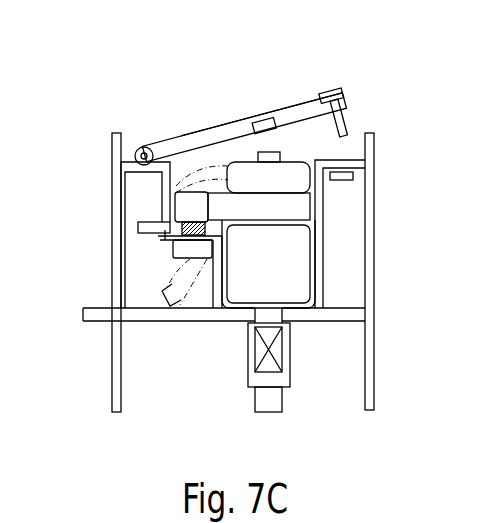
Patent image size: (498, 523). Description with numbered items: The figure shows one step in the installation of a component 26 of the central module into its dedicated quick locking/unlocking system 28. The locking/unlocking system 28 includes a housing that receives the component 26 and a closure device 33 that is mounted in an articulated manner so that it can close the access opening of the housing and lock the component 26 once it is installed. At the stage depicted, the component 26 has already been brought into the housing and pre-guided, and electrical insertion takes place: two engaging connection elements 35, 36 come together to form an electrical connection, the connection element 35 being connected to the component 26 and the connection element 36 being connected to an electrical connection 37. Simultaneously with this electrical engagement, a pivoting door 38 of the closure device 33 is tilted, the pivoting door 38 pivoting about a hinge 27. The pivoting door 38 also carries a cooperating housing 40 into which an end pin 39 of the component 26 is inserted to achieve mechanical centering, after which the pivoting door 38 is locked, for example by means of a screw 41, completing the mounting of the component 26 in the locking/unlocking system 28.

The component 26 is at (315, 237).
The hinge 27 is at (144, 147).
The locking/unlocking system 28 is at (130, 78).
The closure device 33 is at (180, 114).
The connection element 35 is at (161, 228).
The connection element 36 is at (161, 247).
The electrical connection 37 is at (178, 290).
The pivoting door 38 is at (219, 126).
The end pin 39 is at (278, 152).
The cooperating housing 40 is at (266, 108).
The screw 41 is at (333, 90).